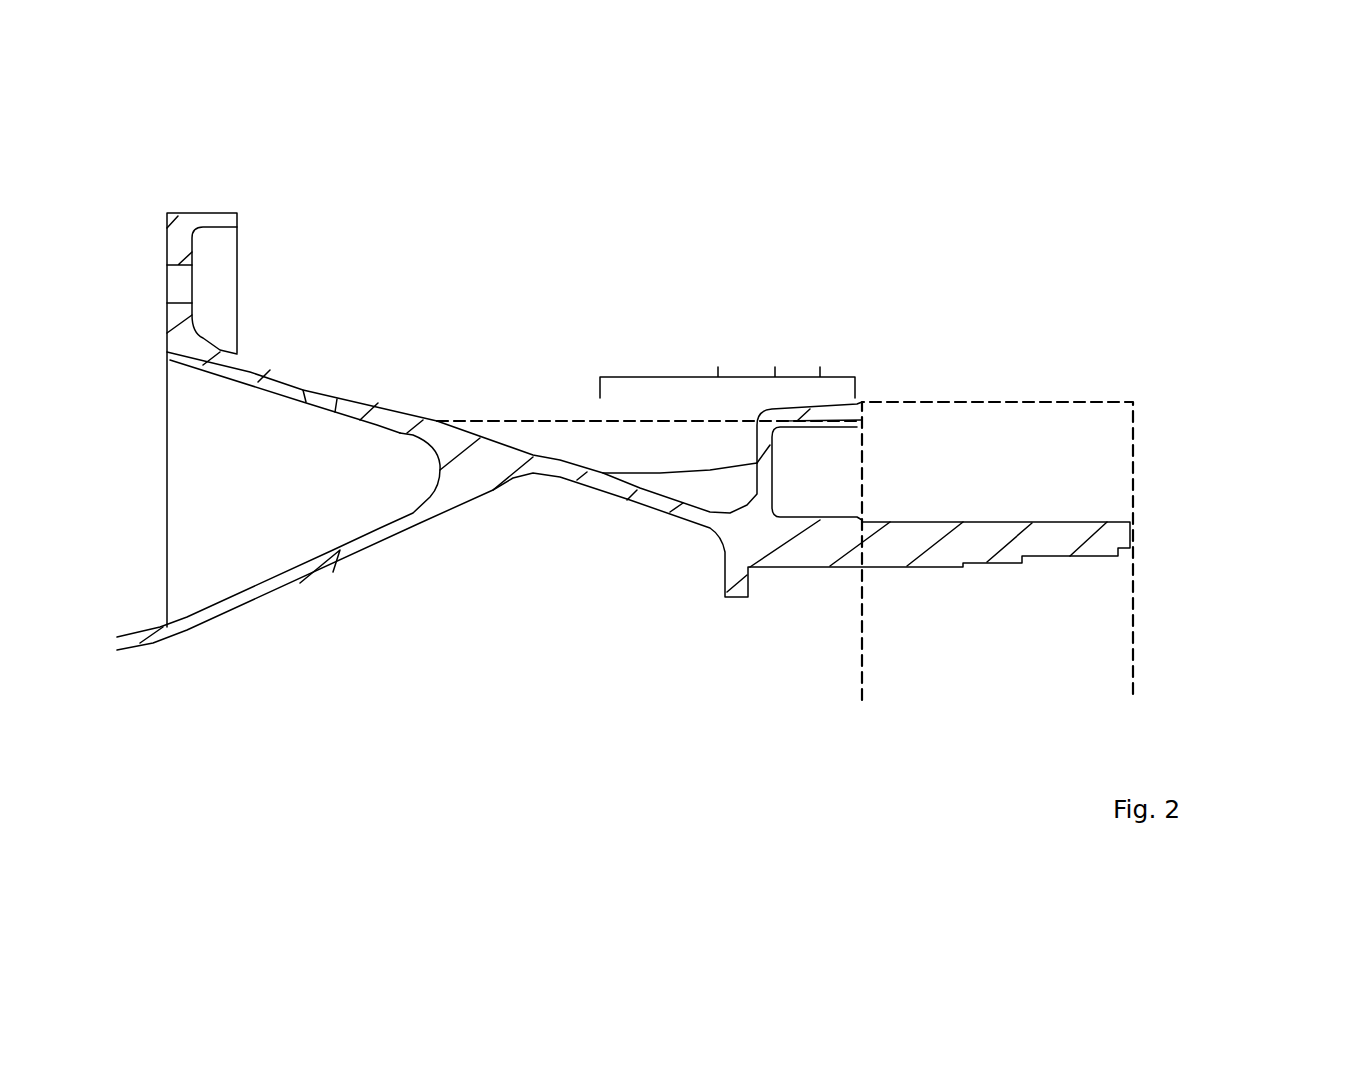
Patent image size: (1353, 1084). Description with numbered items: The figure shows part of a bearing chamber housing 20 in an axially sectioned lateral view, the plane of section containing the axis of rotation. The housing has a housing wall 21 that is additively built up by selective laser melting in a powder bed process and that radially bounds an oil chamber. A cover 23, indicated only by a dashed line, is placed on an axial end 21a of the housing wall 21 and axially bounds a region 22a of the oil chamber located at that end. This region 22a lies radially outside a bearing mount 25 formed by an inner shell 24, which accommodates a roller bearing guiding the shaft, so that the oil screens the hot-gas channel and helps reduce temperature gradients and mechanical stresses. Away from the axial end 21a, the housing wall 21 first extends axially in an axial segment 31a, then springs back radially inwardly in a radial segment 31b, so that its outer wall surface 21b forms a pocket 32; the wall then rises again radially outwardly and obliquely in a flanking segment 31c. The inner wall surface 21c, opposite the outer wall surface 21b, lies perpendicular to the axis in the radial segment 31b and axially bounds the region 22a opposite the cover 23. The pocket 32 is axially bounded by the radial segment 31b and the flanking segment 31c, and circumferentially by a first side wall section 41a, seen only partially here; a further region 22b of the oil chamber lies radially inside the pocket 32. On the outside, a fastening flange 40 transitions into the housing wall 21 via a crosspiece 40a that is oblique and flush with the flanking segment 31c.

The bearing chamber housing 20 is at (823, 245).
The fastening flange 40 is at (312, 318).
The crosspiece 40a is at (395, 408).
The housing wall 21 is at (835, 443).
The axial end 21a is at (872, 428).
The outer wall surface 21b is at (610, 420).
The inner wall surface 21c is at (877, 472).
The pocket 32 is at (680, 445).
The first side wall section 41a is at (742, 493).
The axial segment 31a is at (818, 376).
The radial segment 31b is at (770, 398).
The flanking segment 31c is at (708, 339).
The cover 23 is at (975, 415).
The inner shell 24 is at (900, 545).
The bearing mount 25 is at (1002, 667).
The region of the oil chamber 22a is at (803, 500).
The region of the oil chamber 22b is at (690, 600).